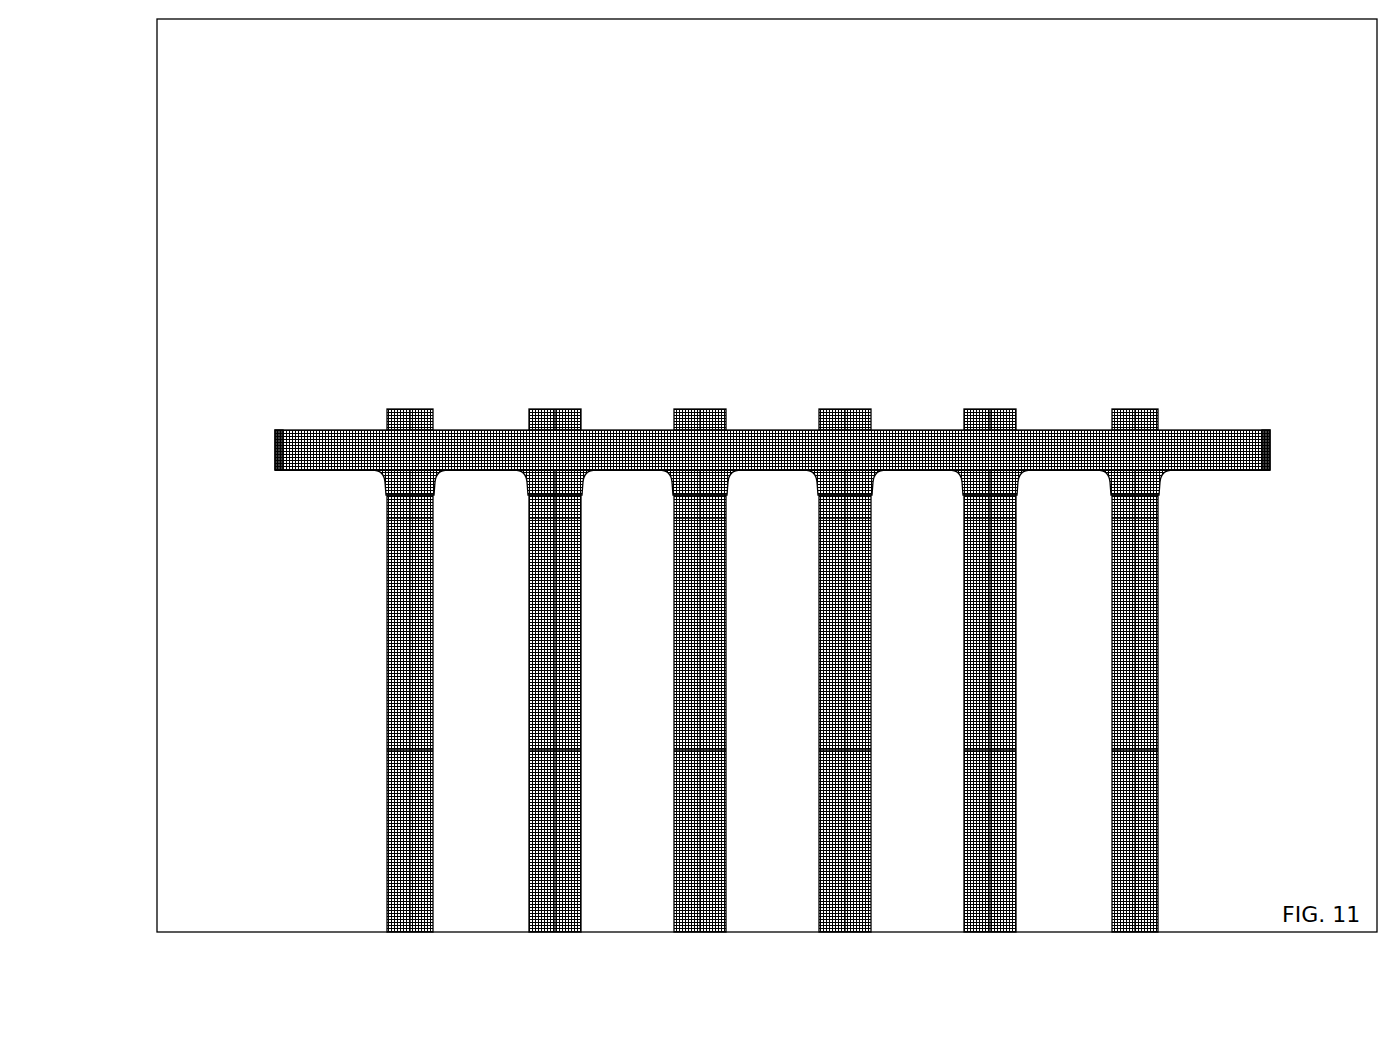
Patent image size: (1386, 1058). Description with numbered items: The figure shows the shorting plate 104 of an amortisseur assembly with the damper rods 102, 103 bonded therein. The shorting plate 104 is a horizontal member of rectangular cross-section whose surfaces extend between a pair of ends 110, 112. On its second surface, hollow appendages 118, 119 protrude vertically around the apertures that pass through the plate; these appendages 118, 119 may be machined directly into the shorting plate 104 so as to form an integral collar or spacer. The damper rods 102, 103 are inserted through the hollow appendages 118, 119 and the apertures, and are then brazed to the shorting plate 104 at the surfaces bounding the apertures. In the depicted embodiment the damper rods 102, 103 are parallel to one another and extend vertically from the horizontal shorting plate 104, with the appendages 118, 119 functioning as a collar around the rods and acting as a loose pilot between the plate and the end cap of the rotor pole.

The damper rod 102 is at (583, 863).
The damper rod 103 is at (437, 865).
The shorting plate 104 is at (1059, 425).
The end 110 is at (272, 437).
The end 112 is at (1280, 440).
The hollow appendage 118 is at (533, 478).
The hollow appendage 119 is at (390, 477).